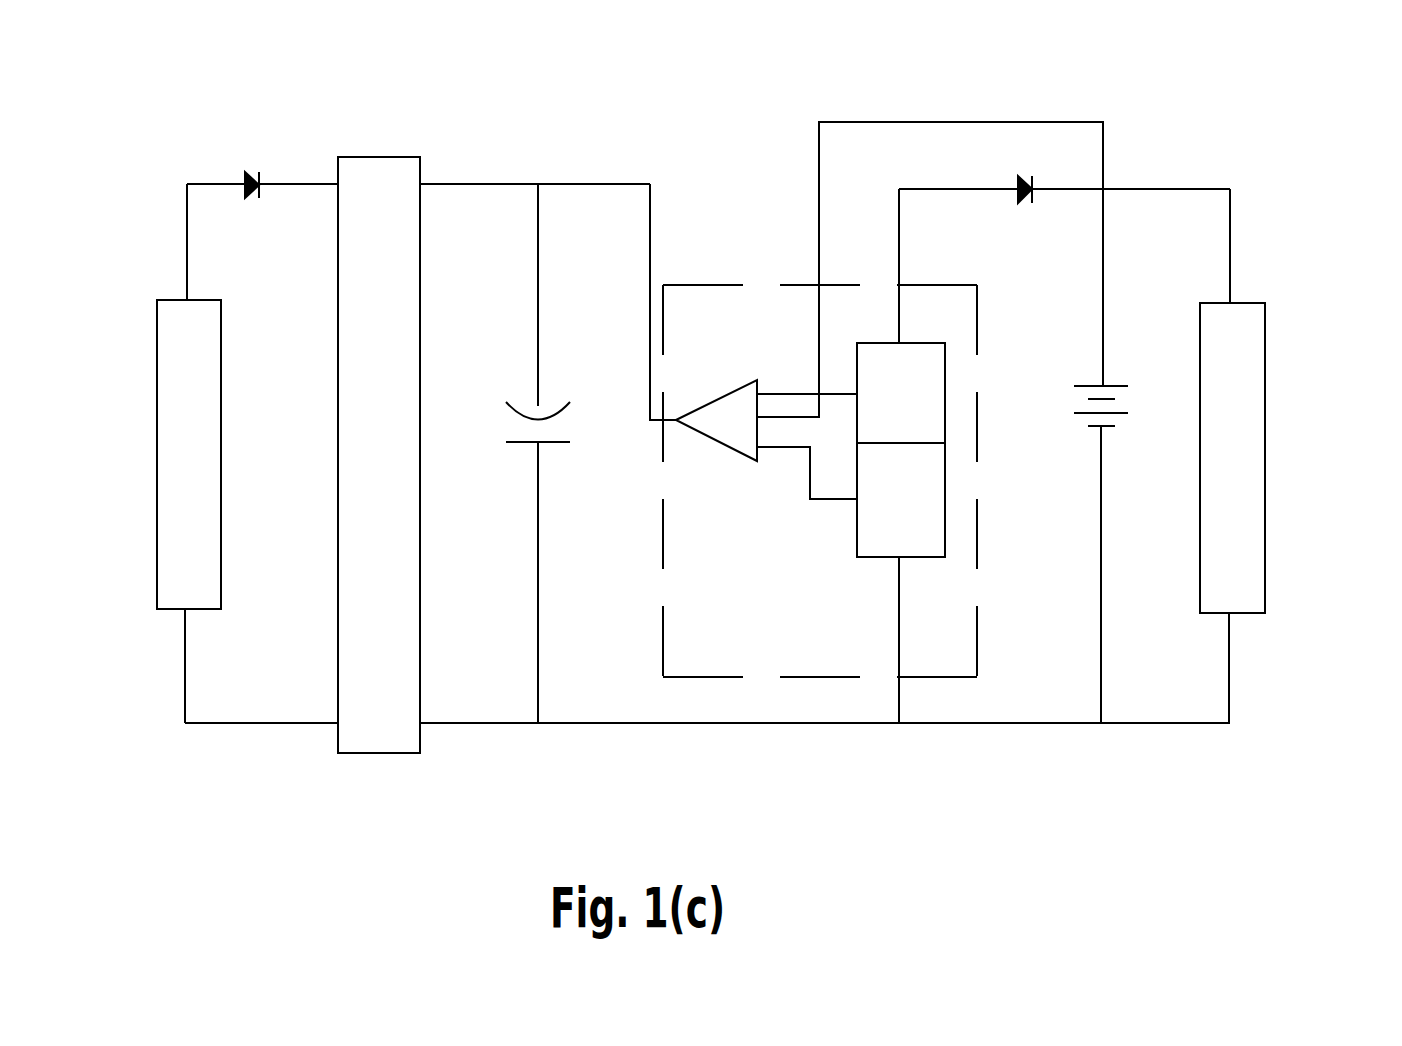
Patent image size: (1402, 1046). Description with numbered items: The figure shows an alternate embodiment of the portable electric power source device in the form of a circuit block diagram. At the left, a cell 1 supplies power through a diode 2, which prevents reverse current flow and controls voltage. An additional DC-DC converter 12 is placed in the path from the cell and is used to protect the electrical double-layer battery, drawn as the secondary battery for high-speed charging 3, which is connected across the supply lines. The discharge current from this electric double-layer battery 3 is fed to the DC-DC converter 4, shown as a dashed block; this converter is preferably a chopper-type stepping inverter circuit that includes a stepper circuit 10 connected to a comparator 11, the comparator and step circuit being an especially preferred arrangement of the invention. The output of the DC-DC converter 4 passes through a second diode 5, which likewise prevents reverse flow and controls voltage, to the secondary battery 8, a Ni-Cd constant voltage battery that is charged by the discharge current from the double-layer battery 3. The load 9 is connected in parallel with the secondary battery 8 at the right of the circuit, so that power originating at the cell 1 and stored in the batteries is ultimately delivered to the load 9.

The cell 1 is at (160, 278).
The diode 2 is at (243, 157).
The secondary battery for high-speed charging 3 is at (556, 458).
The DC-DC converter 4 is at (737, 280).
The diode 5 is at (1027, 224).
The secondary battery 8 is at (1084, 448).
The load 9 is at (1279, 365).
The stepper circuit 10 is at (855, 573).
The comparator 11 is at (708, 449).
The DC-DC converter 12 is at (385, 138).